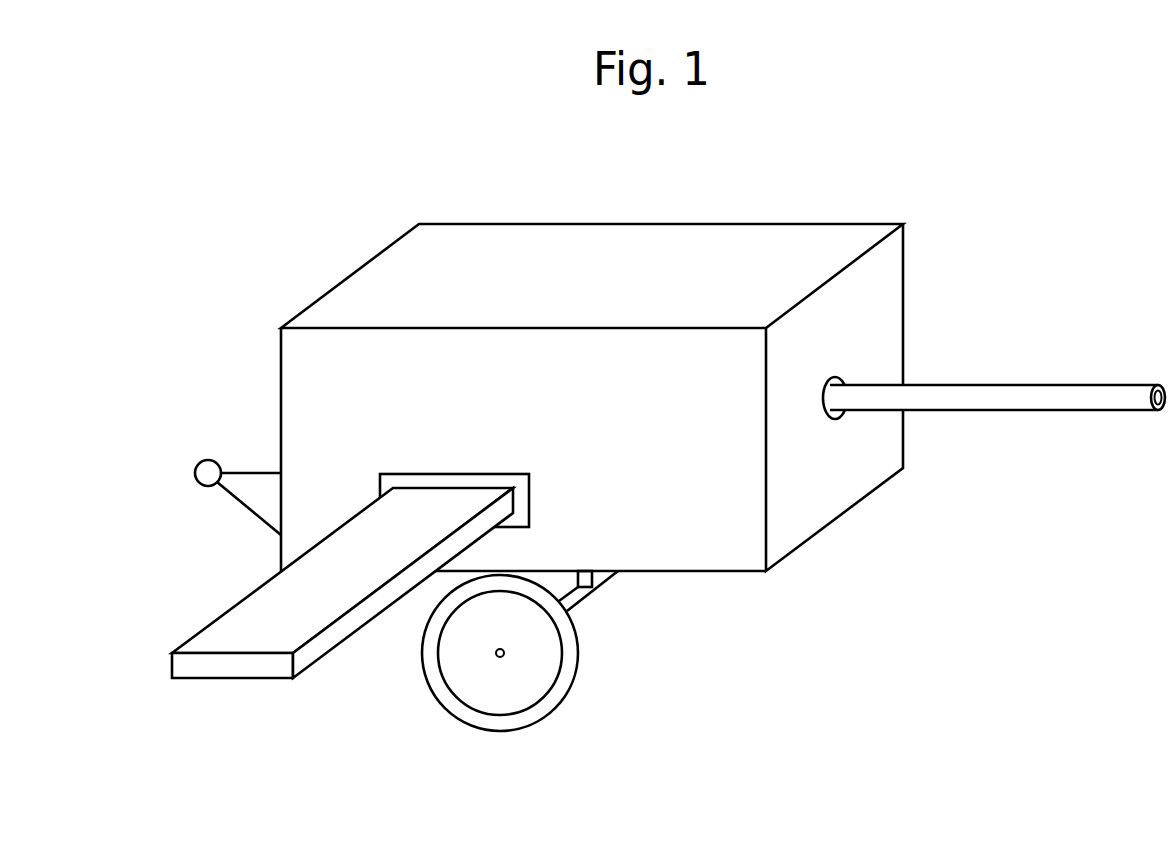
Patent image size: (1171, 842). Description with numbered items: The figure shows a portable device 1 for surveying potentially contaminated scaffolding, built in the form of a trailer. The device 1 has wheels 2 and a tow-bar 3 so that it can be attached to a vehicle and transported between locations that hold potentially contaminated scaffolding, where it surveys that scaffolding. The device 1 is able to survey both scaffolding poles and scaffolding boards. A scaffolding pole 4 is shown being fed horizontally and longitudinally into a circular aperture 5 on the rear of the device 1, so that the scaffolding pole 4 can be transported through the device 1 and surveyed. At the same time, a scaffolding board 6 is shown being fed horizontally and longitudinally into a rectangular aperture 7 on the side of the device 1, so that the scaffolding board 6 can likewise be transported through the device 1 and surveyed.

The portable device 1 is at (297, 215).
The wheels 2 is at (568, 668).
The tow-bar 3 is at (208, 460).
The scaffolding pole 4 is at (1060, 390).
The circular aperture 5 is at (835, 380).
The scaffolding board 6 is at (251, 674).
The rectangular aperture 7 is at (502, 476).